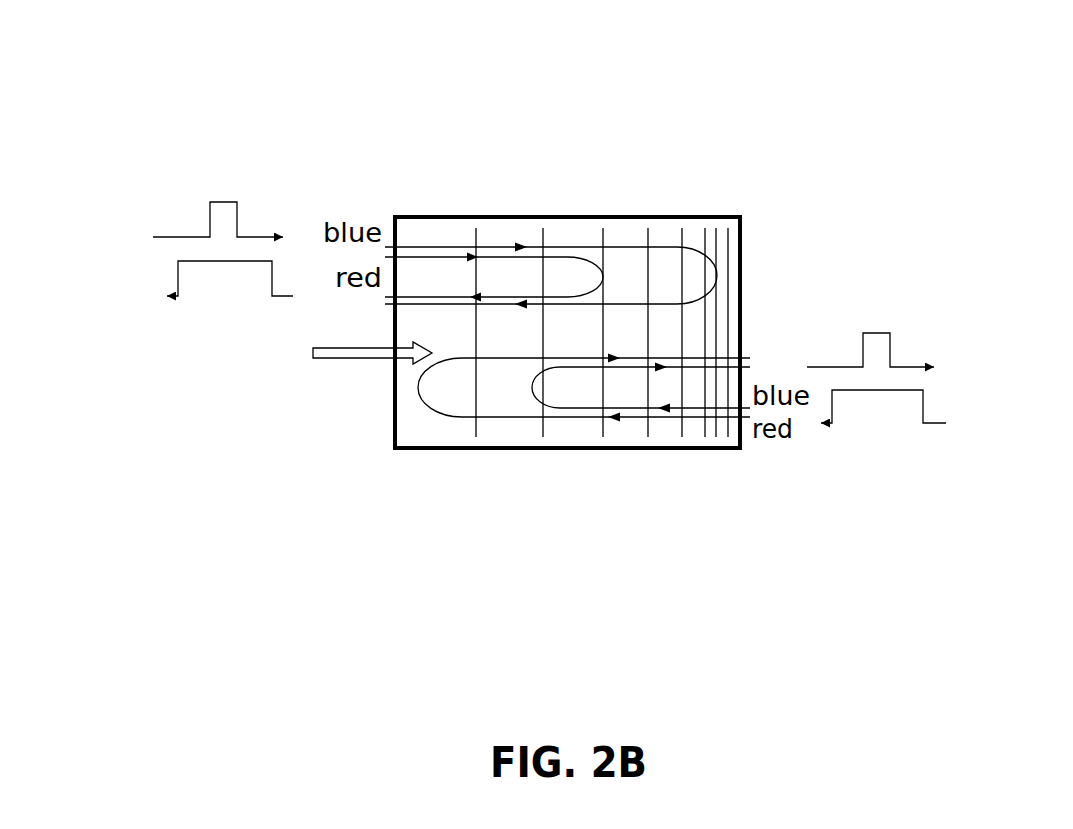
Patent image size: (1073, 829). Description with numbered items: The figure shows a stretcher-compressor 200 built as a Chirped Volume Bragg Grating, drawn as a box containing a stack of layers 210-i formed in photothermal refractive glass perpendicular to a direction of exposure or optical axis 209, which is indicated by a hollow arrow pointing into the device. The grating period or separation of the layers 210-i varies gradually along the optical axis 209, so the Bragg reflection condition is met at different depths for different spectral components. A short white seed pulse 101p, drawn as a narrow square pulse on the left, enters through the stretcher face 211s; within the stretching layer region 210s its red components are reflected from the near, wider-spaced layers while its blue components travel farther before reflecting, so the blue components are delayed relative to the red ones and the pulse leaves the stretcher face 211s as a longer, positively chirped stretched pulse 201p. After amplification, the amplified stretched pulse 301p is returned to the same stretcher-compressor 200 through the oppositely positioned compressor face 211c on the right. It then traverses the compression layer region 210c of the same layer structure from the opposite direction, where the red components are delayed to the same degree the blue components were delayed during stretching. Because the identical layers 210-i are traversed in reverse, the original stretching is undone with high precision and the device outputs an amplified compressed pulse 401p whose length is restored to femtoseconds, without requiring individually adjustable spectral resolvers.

The stretcher-compressor 200 is at (545, 205).
The stretcher face 211s is at (395, 215).
The compressor face 211c is at (742, 448).
The layers 210-i is at (543, 505).
The stretching layer region 210s is at (625, 285).
The compression layer region 210c is at (508, 388).
The short seed pulse 101p is at (235, 197).
The stretched pulse 201p is at (226, 299).
The optical axis 209 is at (347, 357).
The amplified compressed pulse 401p is at (916, 311).
The amplified stretched pulse 301p is at (915, 454).